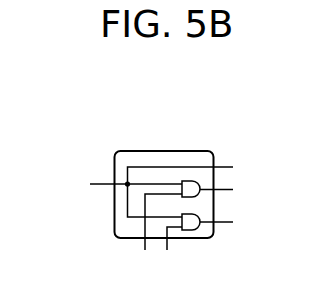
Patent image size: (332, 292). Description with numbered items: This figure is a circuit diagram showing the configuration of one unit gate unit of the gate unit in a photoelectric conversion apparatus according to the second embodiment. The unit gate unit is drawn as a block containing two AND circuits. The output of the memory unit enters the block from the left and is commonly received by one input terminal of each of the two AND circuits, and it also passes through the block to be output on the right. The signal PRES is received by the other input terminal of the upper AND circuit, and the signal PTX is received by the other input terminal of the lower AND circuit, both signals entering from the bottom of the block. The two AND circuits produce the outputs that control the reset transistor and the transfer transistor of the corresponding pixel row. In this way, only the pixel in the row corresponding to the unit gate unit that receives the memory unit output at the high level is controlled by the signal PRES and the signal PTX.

The signal PRES is at (137, 235).
The signal PTX is at (182, 252).